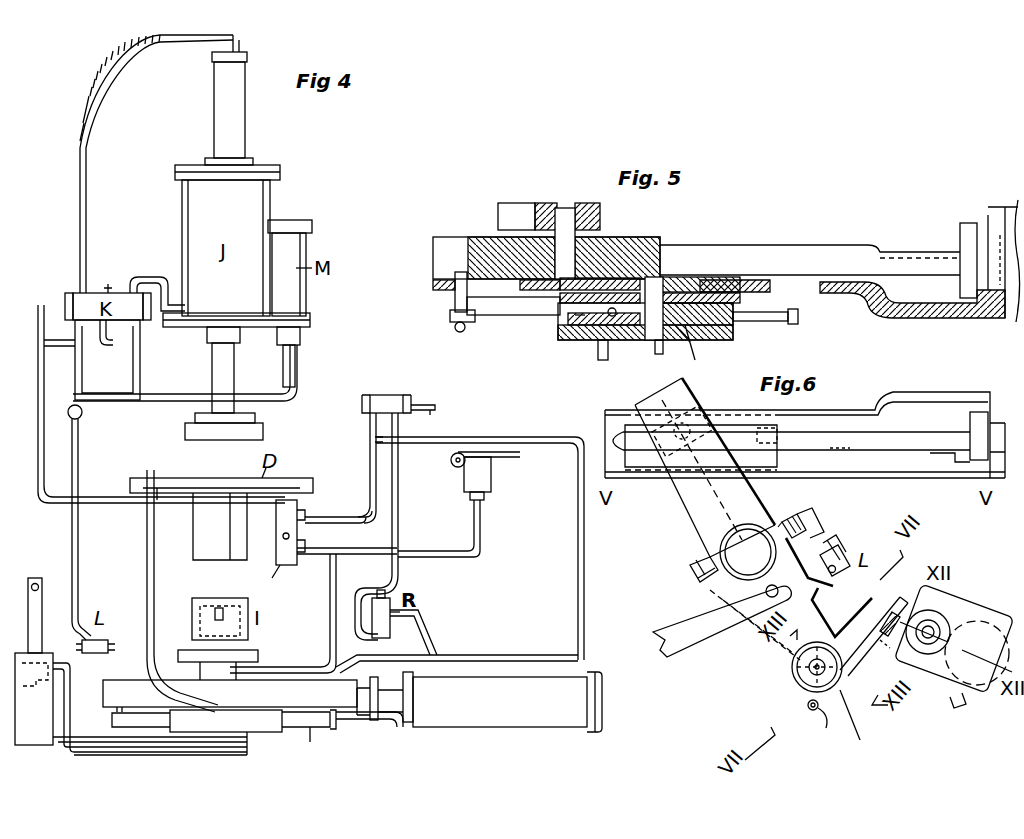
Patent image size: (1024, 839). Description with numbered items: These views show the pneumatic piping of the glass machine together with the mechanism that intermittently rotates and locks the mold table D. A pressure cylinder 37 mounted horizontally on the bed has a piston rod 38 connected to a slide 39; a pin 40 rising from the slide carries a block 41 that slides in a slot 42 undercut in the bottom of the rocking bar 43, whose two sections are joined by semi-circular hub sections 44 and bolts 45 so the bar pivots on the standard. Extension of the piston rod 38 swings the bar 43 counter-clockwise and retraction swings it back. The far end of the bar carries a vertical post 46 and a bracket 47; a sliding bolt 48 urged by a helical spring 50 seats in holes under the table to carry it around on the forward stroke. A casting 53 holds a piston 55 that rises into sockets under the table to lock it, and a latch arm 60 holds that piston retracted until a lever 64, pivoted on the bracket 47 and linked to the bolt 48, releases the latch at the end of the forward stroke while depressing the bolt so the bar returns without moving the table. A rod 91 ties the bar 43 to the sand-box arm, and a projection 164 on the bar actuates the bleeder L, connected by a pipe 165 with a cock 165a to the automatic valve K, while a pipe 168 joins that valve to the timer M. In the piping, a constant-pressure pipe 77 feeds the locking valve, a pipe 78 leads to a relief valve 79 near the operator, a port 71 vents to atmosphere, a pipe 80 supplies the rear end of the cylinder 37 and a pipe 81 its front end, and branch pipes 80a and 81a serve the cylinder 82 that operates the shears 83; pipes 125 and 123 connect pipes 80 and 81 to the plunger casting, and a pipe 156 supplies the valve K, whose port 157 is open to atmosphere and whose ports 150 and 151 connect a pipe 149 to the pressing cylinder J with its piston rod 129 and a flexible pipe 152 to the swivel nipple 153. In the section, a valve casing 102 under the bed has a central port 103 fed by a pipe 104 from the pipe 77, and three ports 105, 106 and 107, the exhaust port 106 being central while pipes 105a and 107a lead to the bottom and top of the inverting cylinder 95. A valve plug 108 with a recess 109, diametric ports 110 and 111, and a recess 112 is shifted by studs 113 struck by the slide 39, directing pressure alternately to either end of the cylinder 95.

In FIG. 4, the pressure cylinder 37 is at (479, 702).
In FIG. 5, the pressure cylinder 37 is at (1004, 210).
In FIG. 6, the pressure cylinder 37 is at (1000, 395).
In FIG. 5, the piston rod 38 is at (810, 260).
In FIG. 6, the piston rod 38 is at (805, 435).
In FIG. 5, the slide 39 is at (600, 247).
In FIG. 5, the pin 40 is at (594, 195).
In FIG. 5, the block 41 is at (552, 192).
In FIG. 5, the slot 42 is at (528, 193).
In FIG. 5, the rocking bar 43 is at (575, 230).
In FIG. 6, the rocking bar 43 is at (705, 480).
In FIG. 6, the semi-circular hub sections 44 is at (790, 514).
In FIG. 6, the bolts 45 is at (822, 512).
In FIG. 6, the vertical cylindrical post 46 is at (797, 665).
In FIG. 6, the bracket 47 is at (880, 598).
In FIG. 6, the sliding bolt 48 is at (818, 700).
In FIG. 6, the helical spring 50 is at (840, 731).
In FIG. 4, the casting 53 is at (260, 573).
In FIG. 6, the casting 53 is at (954, 646).
In FIG. 6, the piston 55 is at (938, 622).
In FIG. 6, the latch arm 60 is at (883, 647).
In FIG. 6, the lever 64 is at (861, 726).
In FIG. 4, the port 71 is at (283, 536).
In FIG. 4, the constant fluid pressure pipe 77 is at (38, 373).
In FIG. 4, the pipe 78 is at (315, 560).
In FIG. 4, the pressure relief valve 79 is at (491, 478).
In FIG. 4, the pipe 80 is at (370, 478).
In FIG. 4, the branch pipe 80a is at (374, 436).
In FIG. 4, the pipe 81 is at (338, 522).
In FIG. 4, the branch pipe 81a is at (400, 500).
In FIG. 4, the shears cylinder 82 is at (387, 395).
In FIG. 4, the shears 83 is at (432, 400).
In FIG. 6, the rod 91 is at (678, 622).
In FIG. 4, the cylinder 95 is at (131, 665).
In FIG. 4, the cylindrical valve casing 102 is at (257, 721).
In FIG. 5, the cylindrical valve casing 102 is at (667, 340).
In FIG. 4, the central port 103 is at (232, 707).
In FIG. 5, the central port 103 is at (650, 290).
In FIG. 4, the pipe 104 is at (166, 582).
In FIG. 5, the port 105 is at (590, 325).
In FIG. 4, the pipe 105a is at (60, 745).
In FIG. 5, the pipe 105a is at (579, 359).
In FIG. 5, the exhaust port 106 is at (625, 325).
In FIG. 5, the port 107 is at (696, 343).
In FIG. 4, the pipe 107a is at (215, 755).
In FIG. 5, the pipe 107a is at (702, 352).
In FIG. 4, the valve plug 108 is at (315, 745).
In FIG. 5, the valve plug 108 is at (496, 300).
In FIG. 5, the recess 109 is at (735, 290).
In FIG. 5, the port 110 is at (629, 299).
In FIG. 5, the port 111 is at (745, 316).
In FIG. 5, the recess 112 is at (638, 330).
In FIG. 5, the studs 113 is at (455, 300).
In FIG. 4, the pipe 123 is at (331, 617).
In FIG. 4, the pipe 125 is at (522, 638).
In FIG. 4, the piston rod 129 is at (213, 383).
In FIG. 4, the pipe 149 is at (152, 276).
In FIG. 4, the port 150 is at (148, 283).
In FIG. 4, the port 151 is at (65, 300).
In FIG. 4, the flexible pipe 152 is at (134, 164).
In FIG. 4, the swivel nipple 153 is at (237, 50).
In FIG. 4, the pipe 156 is at (113, 343).
In FIG. 4, the port 157 is at (112, 274).
In FIG. 6, the projection 164 is at (842, 612).
In FIG. 4, the pipe 165 is at (88, 445).
In FIG. 6, the pipe 165 is at (847, 542).
In FIG. 4, the cock 165a is at (82, 412).
In FIG. 4, the pipe 168 is at (182, 385).